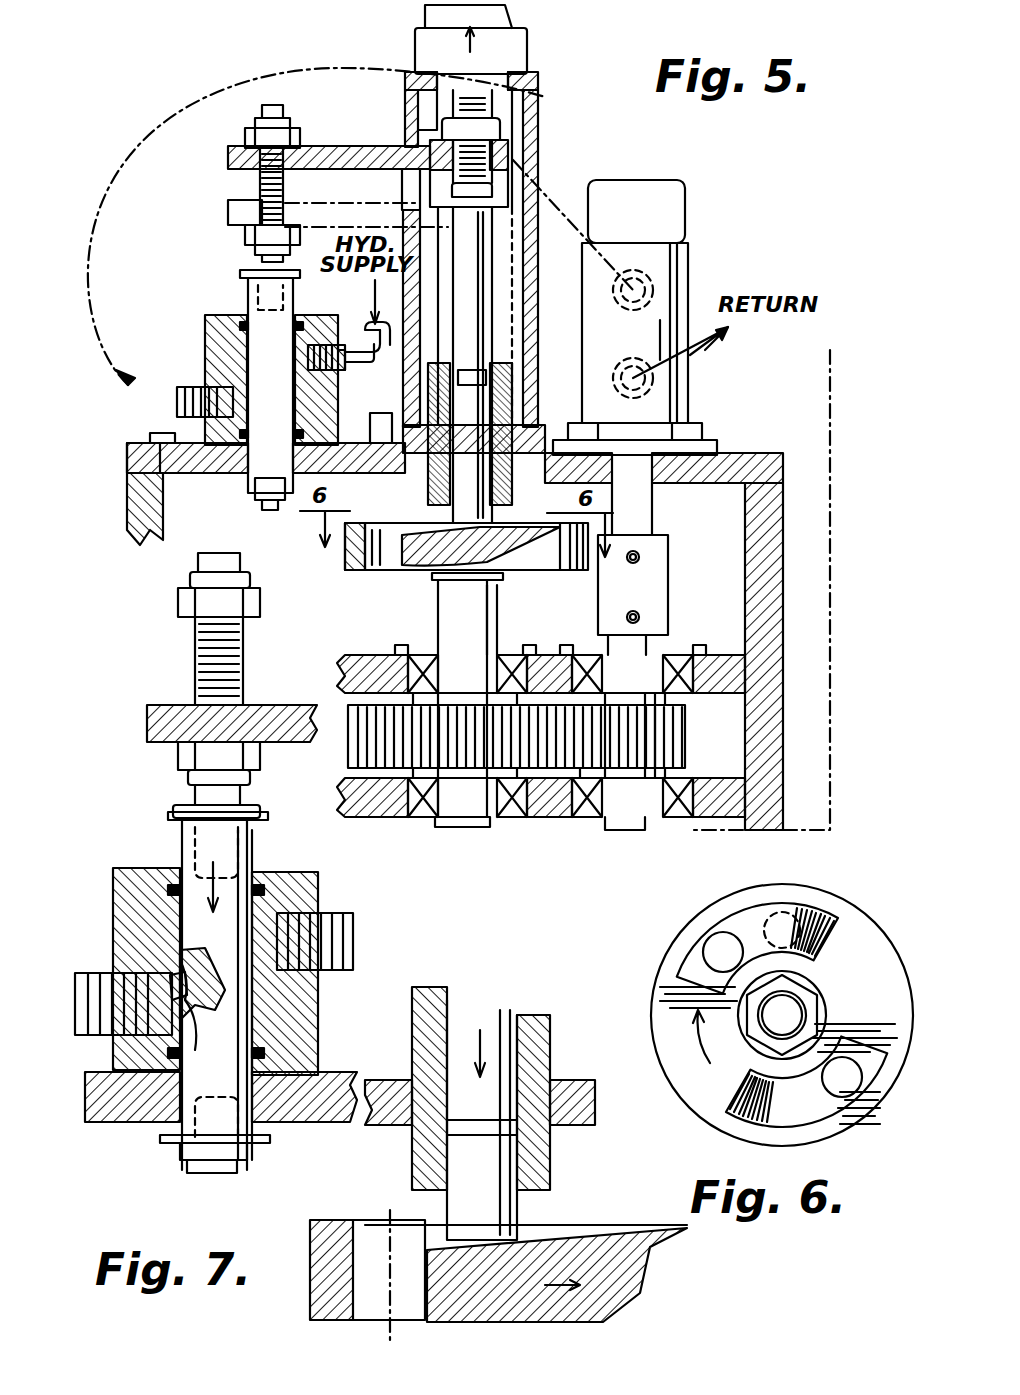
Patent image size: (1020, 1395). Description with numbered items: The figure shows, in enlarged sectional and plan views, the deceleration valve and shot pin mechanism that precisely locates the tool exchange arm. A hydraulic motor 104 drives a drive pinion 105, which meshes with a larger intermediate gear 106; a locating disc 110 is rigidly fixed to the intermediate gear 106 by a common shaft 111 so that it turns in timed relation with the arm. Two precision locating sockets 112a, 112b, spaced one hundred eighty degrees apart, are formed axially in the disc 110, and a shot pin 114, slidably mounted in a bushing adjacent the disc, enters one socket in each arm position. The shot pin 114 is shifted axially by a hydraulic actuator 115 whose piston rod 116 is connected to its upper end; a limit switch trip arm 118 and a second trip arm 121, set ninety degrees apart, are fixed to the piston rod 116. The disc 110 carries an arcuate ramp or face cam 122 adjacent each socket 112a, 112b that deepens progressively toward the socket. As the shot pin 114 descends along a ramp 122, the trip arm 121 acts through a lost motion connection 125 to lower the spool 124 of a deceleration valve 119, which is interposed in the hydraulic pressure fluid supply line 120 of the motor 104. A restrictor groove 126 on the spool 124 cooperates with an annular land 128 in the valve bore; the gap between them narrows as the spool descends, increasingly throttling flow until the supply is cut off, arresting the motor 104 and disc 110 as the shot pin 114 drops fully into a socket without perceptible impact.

In FIG. 5, the motor 104 is at (688, 250).
In FIG. 5, the drive pinion 105 is at (683, 738).
In FIG. 5, the intermediate gear 106 is at (547, 765).
In FIG. 5, the disc 110 is at (530, 567).
In FIG. 7, the disc 110 is at (330, 1217).
In FIG. 6, the disc 110 is at (880, 935).
In FIG. 5, the common shaft 111 is at (445, 620).
In FIG. 6, the common shaft 111 is at (795, 1007).
In FIG. 5, the locating socket 112a is at (388, 560).
In FIG. 7, the locating socket 112a is at (405, 1320).
In FIG. 6, the locating socket 112a is at (712, 948).
In FIG. 6, the locating socket 112b is at (838, 1090).
In FIG. 5, the shot pin 114 is at (492, 325).
In FIG. 7, the shot pin 114 is at (480, 1005).
In FIG. 6, the shot pin 114 is at (800, 905).
In FIG. 5, the hydraulic actuator 115 is at (514, 22).
In FIG. 5, the piston rod 116 is at (470, 128).
In FIG. 5, the trip arm 118 is at (510, 148).
In FIG. 5, the deceleration valve 119 is at (205, 358).
In FIG. 7, the deceleration valve 119 is at (128, 868).
In FIG. 5, the hydraulic pressure fluid supply line 120 is at (375, 325).
In FIG. 7, the hydraulic pressure fluid supply line 120 is at (345, 925).
In FIG. 5, the trip arm 121 is at (228, 156).
In FIG. 7, the trip arm 121 is at (147, 738).
In FIG. 5, the ramp 122 is at (420, 523).
In FIG. 7, the ramp 122 is at (547, 1240).
In FIG. 6, the ramp 122 is at (748, 922).
In FIG. 5, the spool 124 is at (250, 300).
In FIG. 7, the spool 124 is at (182, 1123).
In FIG. 5, the lost motion connection 125 is at (262, 200).
In FIG. 7, the lost motion connection 125 is at (197, 672).
In FIG. 7, the restrictor groove 126 is at (182, 1050).
In FIG. 7, the annular land 128 is at (180, 945).